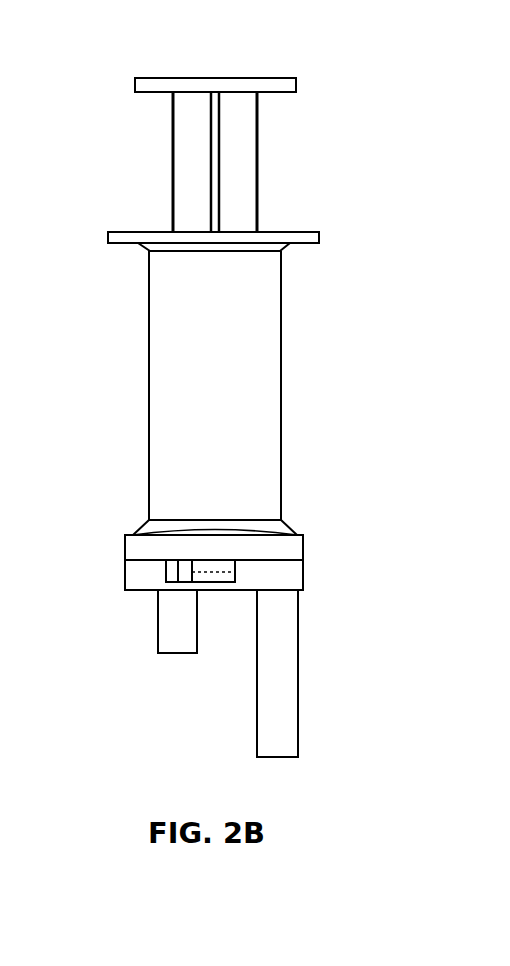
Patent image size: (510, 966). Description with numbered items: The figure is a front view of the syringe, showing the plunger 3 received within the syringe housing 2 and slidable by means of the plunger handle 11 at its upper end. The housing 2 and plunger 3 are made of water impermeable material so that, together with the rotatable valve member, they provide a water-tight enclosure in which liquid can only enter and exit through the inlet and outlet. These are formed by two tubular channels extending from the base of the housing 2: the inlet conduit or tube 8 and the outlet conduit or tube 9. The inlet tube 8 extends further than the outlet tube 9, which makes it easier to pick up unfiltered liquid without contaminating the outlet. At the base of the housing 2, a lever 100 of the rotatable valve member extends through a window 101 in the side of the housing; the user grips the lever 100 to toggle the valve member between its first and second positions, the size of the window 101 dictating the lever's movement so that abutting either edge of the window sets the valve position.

The plunger handle 11 is at (195, 79).
The plunger 3 is at (257, 170).
The syringe housing 2 is at (281, 387).
The lever 100 is at (176, 572).
The window 101 is at (218, 572).
The outlet conduit or tube 9 is at (158, 630).
The inlet conduit or tube 8 is at (257, 698).